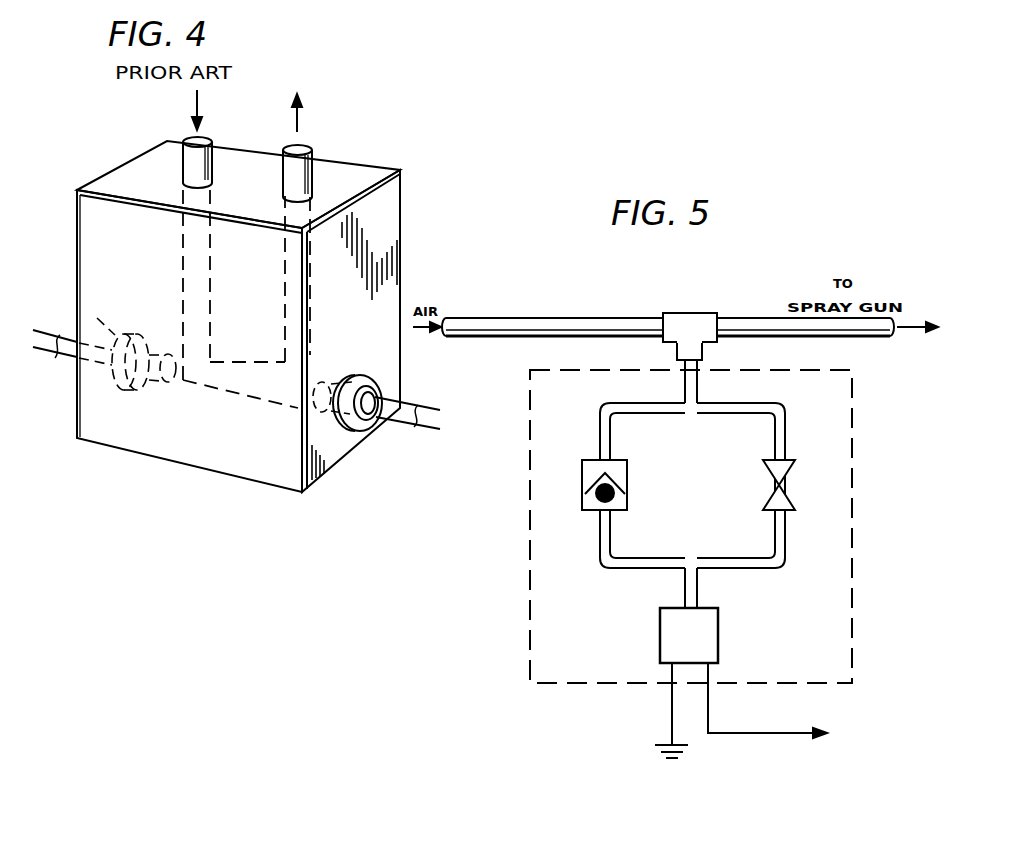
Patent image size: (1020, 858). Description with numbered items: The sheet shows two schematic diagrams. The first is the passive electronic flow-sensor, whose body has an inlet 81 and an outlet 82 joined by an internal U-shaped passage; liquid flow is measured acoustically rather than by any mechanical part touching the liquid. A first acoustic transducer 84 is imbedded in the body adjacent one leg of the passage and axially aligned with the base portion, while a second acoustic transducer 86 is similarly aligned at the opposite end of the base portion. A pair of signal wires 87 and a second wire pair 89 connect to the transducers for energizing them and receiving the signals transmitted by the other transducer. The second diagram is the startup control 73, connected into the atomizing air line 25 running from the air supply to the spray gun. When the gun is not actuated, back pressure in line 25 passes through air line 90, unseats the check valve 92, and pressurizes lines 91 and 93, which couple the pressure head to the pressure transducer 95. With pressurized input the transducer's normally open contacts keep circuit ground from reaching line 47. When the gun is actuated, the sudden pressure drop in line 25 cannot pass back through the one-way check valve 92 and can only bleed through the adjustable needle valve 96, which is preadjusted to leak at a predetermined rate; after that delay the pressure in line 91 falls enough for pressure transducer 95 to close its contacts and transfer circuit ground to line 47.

In FIG. 5, the atomizing air line 25 is at (583, 318).
In FIG. 5, the line 47 is at (735, 733).
In FIG. 5, the startup control 73 is at (530, 517).
In FIG. 4, the inlet 81 is at (212, 157).
In FIG. 4, the outlet 82 is at (312, 163).
In FIG. 4, the first acoustic transducer 84 is at (370, 378).
In FIG. 4, the second acoustic transducer 86 is at (97, 318).
In FIG. 4, the signal wires 87 is at (428, 412).
In FIG. 4, the second wire pair 89 is at (60, 342).
In FIG. 5, the air line 90 is at (697, 385).
In FIG. 5, the line 91 is at (785, 543).
In FIG. 5, the check valve 92 is at (627, 475).
In FIG. 5, the line 93 is at (600, 540).
In FIG. 5, the pressure transducer 95 is at (718, 633).
In FIG. 5, the adjustable needle valve 96 is at (795, 476).